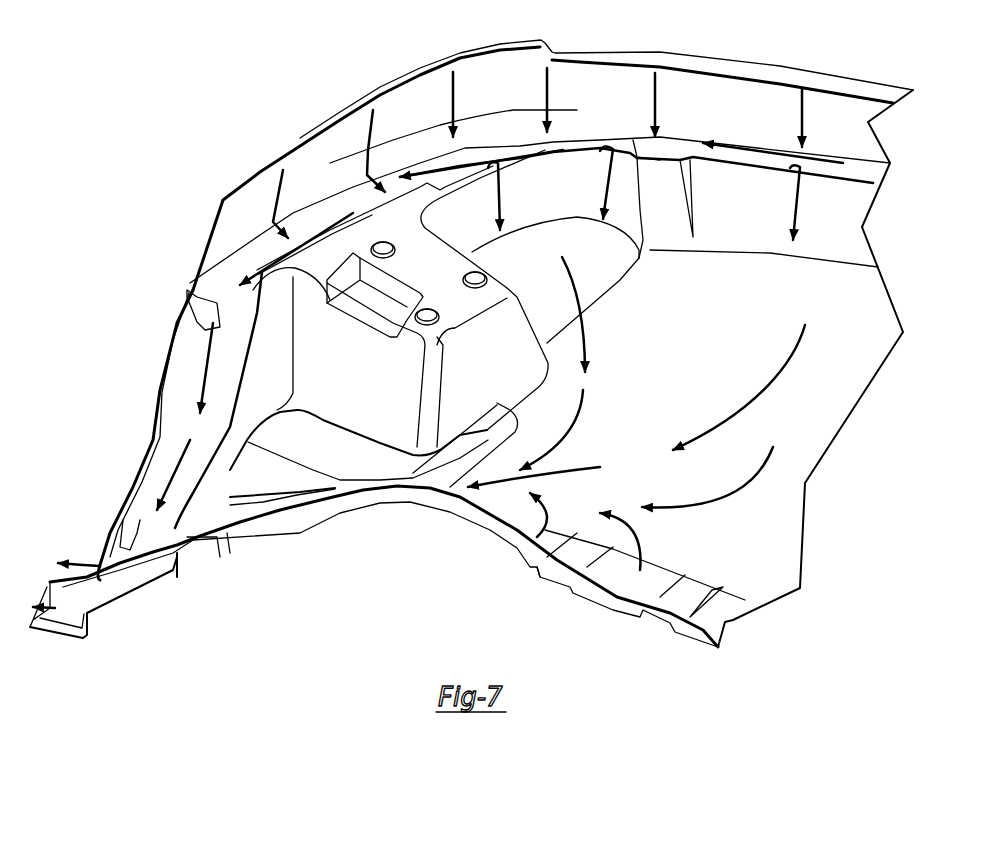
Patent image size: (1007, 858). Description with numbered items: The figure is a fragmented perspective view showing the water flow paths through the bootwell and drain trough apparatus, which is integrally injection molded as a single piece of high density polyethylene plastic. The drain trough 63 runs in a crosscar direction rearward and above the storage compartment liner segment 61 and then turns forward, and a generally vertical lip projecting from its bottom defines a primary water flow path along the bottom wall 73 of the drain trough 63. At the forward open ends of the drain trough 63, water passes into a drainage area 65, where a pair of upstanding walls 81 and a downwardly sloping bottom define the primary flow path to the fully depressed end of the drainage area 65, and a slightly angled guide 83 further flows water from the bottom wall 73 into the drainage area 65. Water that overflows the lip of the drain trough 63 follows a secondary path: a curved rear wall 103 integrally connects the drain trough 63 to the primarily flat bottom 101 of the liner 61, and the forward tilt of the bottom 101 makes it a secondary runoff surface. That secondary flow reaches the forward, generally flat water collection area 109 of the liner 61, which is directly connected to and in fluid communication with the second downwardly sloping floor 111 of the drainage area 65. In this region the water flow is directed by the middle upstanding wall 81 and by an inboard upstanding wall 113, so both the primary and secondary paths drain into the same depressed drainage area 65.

The storage compartment liner segment 61 is at (838, 379).
The drain trough segment 63 is at (735, 97).
The drainage area 65 is at (193, 555).
The bottom wall 73 is at (355, 205).
The upstanding wall 81 is at (160, 387).
The angled guide 83 is at (197, 322).
The bottom 101 is at (695, 351).
The curved rear wall 103 is at (838, 216).
The water collection area 109 is at (735, 605).
The second downwardly sloping floor 111 is at (270, 505).
The inboard upstanding wall 113 is at (525, 567).